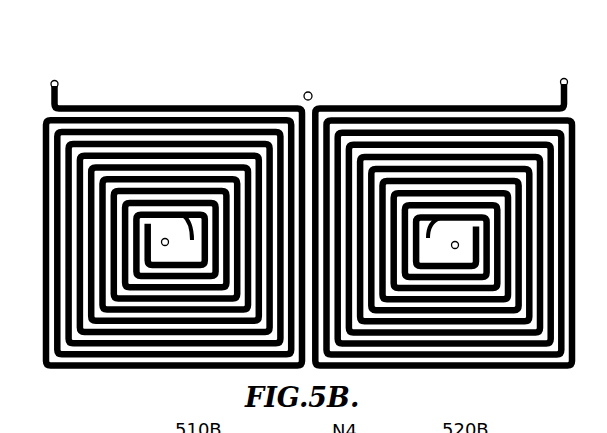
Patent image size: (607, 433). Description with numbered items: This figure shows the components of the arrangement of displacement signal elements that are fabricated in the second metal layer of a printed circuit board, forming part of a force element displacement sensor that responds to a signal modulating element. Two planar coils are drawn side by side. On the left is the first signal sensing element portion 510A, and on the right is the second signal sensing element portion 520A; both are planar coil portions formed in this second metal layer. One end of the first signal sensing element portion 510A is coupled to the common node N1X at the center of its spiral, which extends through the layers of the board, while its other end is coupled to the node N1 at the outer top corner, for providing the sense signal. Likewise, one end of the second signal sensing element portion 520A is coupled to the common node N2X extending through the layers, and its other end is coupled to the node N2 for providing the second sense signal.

The first signal sensing element portion 510A is at (184, 104).
The second signal sensing element portion 520A is at (451, 104).
The node N1 is at (54, 80).
The node N2 is at (571, 64).
The common node N1X is at (179, 238).
The common node N2X is at (438, 240).